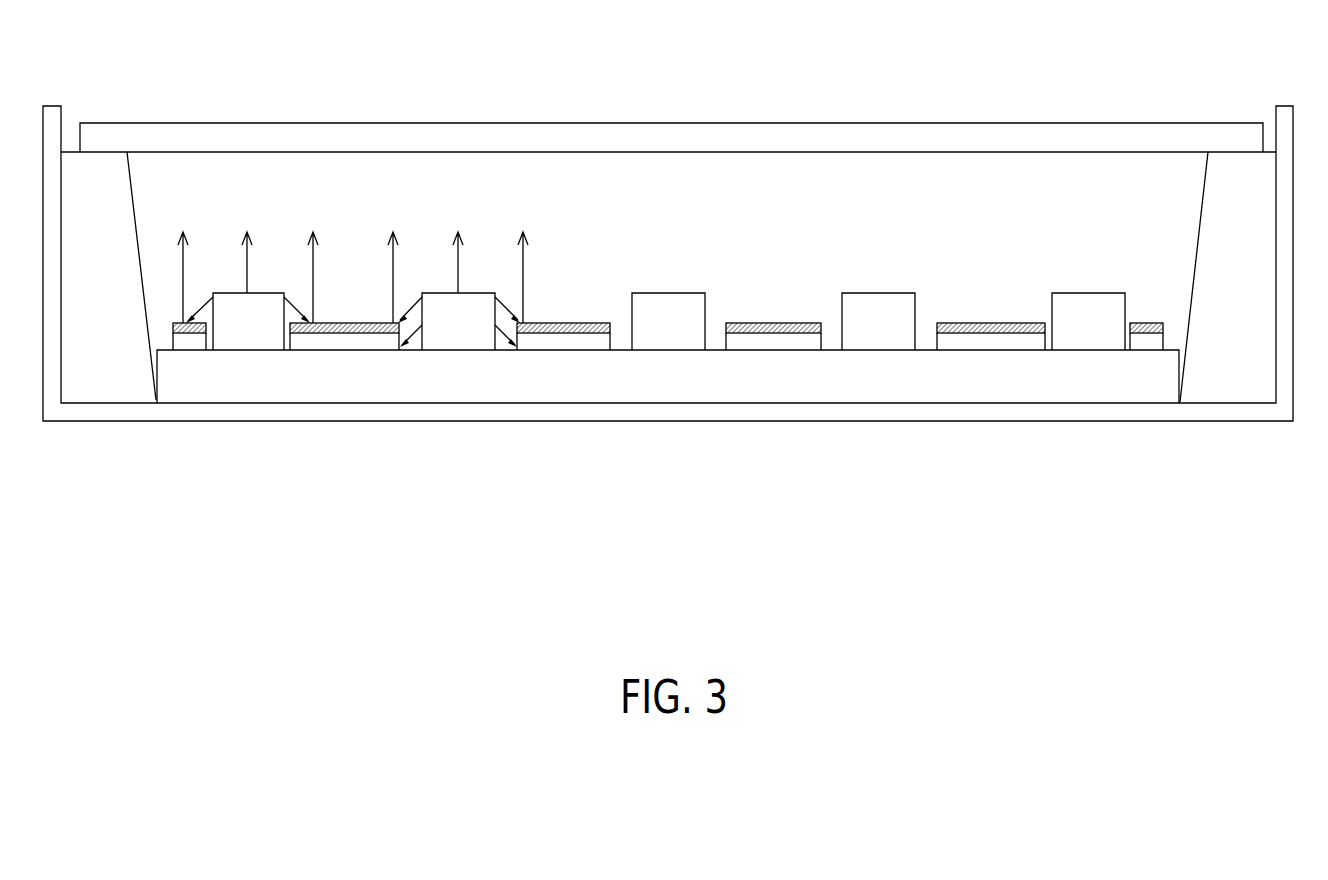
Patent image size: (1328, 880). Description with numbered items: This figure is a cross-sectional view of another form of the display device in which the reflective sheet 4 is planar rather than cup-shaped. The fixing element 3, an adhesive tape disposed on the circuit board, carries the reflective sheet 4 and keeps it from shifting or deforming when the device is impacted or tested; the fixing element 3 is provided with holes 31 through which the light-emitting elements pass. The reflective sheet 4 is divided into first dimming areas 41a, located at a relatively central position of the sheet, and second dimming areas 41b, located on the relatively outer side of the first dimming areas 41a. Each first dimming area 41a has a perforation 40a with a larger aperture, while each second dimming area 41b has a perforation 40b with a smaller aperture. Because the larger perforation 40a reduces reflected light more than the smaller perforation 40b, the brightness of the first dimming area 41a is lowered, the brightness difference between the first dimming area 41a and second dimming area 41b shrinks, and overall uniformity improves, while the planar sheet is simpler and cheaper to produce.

The fixing element 3 is at (320, 347).
The reflective sheet 4 is at (171, 315).
The holes 31 is at (822, 338).
The perforation of first dimming area 40a is at (842, 335).
The perforation of second dimming area 40b is at (1052, 335).
The first dimming area 41a is at (878, 340).
The second dimming area 41b is at (1079, 340).